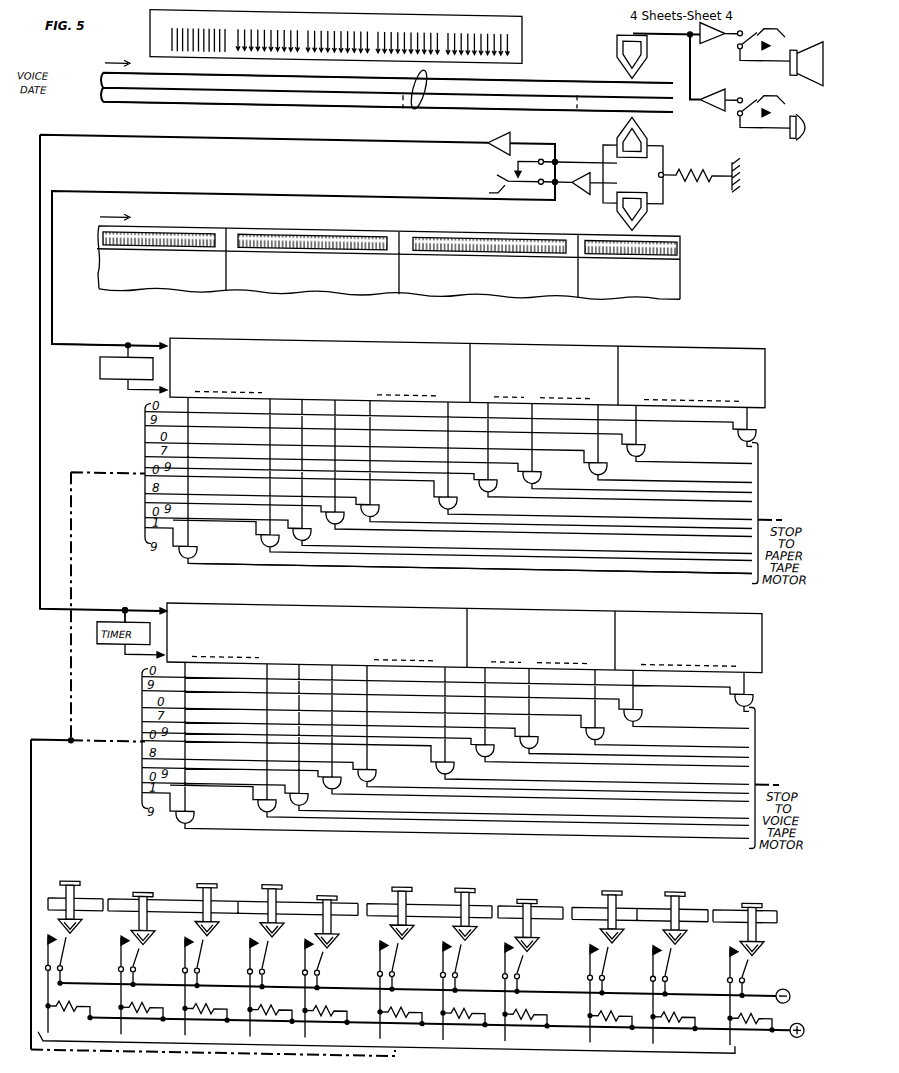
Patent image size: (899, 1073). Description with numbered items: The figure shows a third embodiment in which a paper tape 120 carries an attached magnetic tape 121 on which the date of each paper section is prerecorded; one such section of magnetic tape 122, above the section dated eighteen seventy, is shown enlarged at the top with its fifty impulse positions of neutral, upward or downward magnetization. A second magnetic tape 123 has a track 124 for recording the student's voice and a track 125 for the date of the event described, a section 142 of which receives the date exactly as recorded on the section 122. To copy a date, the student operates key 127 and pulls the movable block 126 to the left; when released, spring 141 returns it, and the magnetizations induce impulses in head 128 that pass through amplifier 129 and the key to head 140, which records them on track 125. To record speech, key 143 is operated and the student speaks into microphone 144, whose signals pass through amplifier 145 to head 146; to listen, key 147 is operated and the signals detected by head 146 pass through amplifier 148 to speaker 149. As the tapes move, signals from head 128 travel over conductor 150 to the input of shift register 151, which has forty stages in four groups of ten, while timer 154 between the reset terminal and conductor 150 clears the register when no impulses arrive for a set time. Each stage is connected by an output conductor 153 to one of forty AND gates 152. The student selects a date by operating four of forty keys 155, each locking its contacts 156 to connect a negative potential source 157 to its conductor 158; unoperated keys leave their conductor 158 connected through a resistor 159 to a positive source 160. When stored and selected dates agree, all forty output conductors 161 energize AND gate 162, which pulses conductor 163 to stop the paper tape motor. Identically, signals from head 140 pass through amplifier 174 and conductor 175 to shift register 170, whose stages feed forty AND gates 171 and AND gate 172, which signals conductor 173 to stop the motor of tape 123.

The paper tape 120 is at (632, 288).
The magnetic tape 121 is at (347, 224).
The section of magnetic tape 122 is at (535, 37).
The second magnetic tape 123 is at (423, 78).
The track 124 is at (345, 78).
The track 125 is at (345, 103).
The section of track 142 is at (432, 103).
The amplifier 174 is at (505, 125).
The conductor 175 is at (243, 140).
The conductor 150 is at (318, 192).
The key 127 is at (500, 166).
The amplifier 129 is at (568, 170).
The head 140 is at (619, 125).
The movable block 126 is at (655, 190).
The head 128 is at (642, 207).
The spring 141 is at (700, 172).
The head 146 is at (617, 36).
The amplifier 148 is at (688, 20).
The key 147 is at (752, 15).
The speaker 149 is at (800, 26).
The amplifier 145 is at (705, 80).
The key 143 is at (745, 90).
The microphone 144 is at (797, 95).
The shift register 151 is at (765, 365).
The timer 154 is at (107, 378).
The output conductor 153 is at (260, 468).
The AND gate 152 is at (555, 461).
The output conductor 161 is at (612, 530).
The AND gate 162 is at (758, 456).
The conductor 163 is at (768, 503).
The shift register 170 is at (480, 631).
The AND gate 171 is at (445, 728).
The AND gate 172 is at (767, 778).
The conductor 173 is at (773, 774).
The key 155 is at (76, 934).
The contacts 156 is at (55, 950).
The negative potential source 157 is at (794, 967).
The conductor 158 is at (122, 1026).
The resistor 159 is at (84, 992).
The positive source 160 is at (796, 1024).